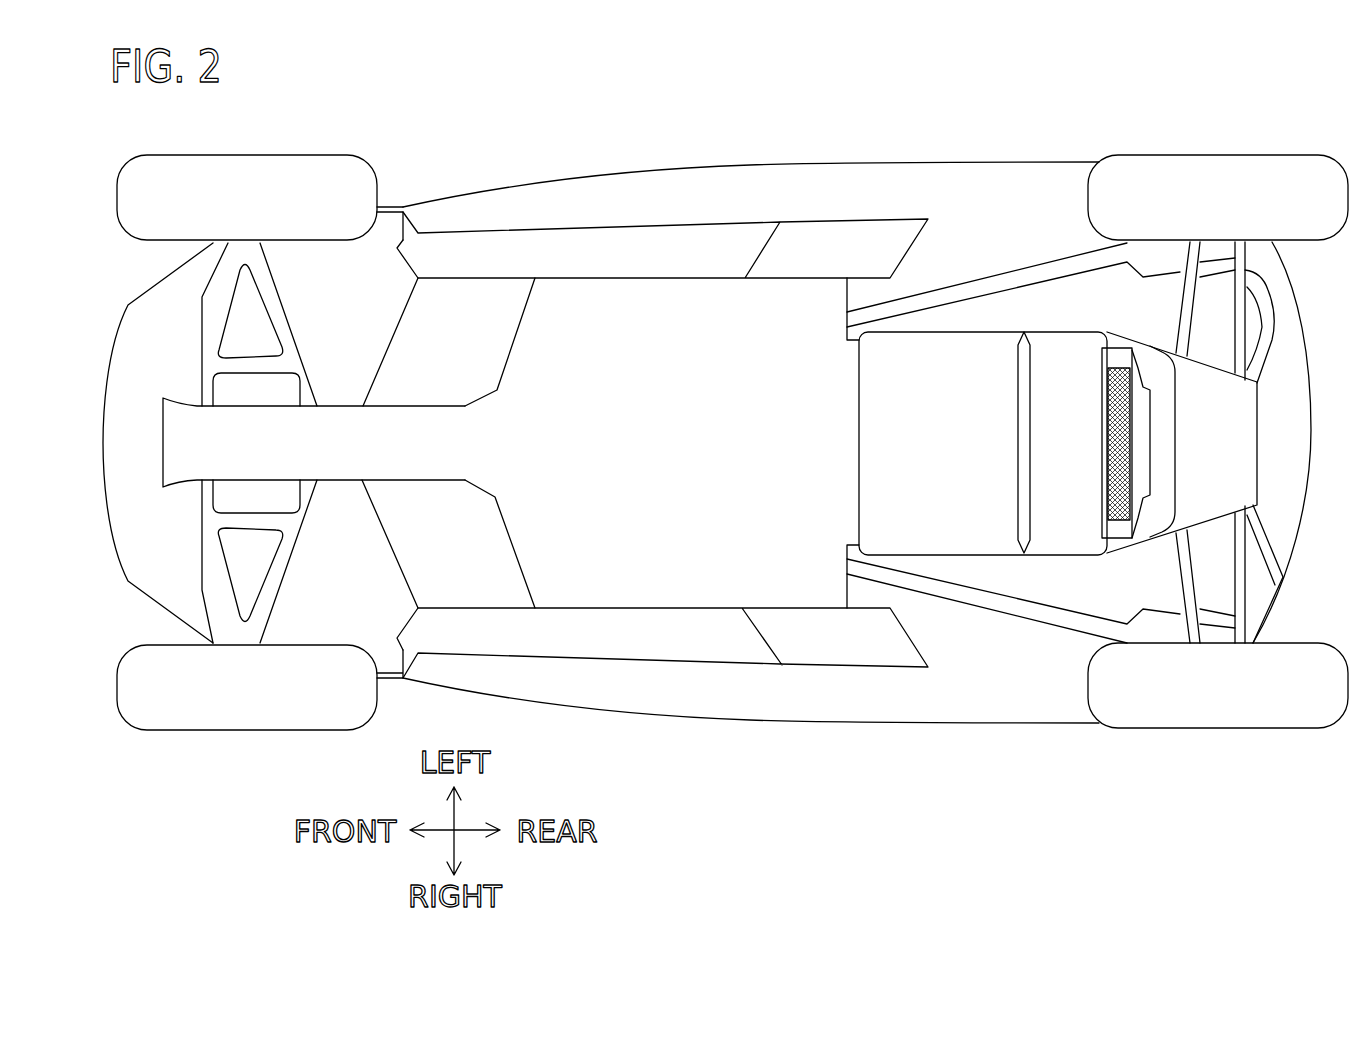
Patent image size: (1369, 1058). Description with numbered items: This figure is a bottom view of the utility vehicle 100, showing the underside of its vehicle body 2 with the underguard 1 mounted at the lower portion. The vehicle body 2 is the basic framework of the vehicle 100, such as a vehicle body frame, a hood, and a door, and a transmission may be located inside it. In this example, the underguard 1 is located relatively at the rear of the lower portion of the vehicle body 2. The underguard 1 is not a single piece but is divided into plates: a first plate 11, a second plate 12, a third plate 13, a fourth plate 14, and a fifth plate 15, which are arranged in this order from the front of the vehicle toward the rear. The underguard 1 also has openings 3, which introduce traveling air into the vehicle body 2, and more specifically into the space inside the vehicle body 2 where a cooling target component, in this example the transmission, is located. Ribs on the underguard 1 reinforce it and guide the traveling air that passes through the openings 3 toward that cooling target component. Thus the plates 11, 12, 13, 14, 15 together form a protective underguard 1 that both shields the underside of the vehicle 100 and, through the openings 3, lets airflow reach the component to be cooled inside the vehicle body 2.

The vehicle 100 is at (821, 112).
The underguard 1 is at (858, 447).
The vehicle body 2 is at (1007, 162).
The openings 3 is at (1121, 368).
The first plate 11 is at (967, 560).
The second plate 12 is at (1060, 560).
The third plate 13 is at (1122, 540).
The fourth plate 14 is at (1152, 352).
The fifth plate 15 is at (1259, 440).